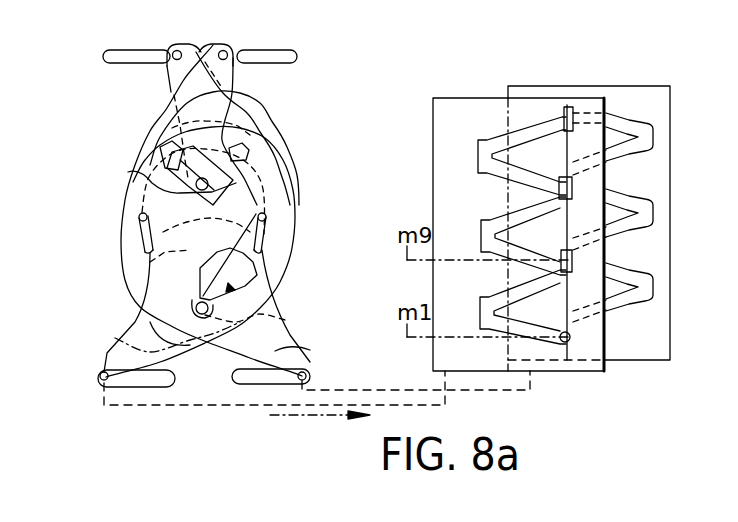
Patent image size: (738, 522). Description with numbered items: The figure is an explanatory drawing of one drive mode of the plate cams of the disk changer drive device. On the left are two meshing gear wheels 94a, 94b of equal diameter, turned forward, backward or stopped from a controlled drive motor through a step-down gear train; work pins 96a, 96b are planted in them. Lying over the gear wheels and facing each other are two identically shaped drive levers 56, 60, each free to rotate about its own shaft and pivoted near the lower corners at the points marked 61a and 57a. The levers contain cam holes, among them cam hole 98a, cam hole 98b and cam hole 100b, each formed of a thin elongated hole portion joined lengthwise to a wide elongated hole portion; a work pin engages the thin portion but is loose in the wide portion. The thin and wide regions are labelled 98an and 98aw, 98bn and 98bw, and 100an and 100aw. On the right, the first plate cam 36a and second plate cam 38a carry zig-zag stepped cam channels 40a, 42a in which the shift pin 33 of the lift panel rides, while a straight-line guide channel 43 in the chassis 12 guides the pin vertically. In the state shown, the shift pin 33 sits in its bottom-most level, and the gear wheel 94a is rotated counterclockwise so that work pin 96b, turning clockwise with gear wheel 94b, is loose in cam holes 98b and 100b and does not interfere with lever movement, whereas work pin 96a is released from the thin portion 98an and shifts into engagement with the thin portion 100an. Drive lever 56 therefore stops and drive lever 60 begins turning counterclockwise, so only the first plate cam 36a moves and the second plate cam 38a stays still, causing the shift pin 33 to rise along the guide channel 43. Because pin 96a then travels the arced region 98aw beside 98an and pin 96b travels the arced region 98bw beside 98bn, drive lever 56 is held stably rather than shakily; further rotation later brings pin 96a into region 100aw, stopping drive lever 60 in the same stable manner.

The chassis 12 is at (106, 200).
The shift pin 33 is at (567, 343).
The first plate cam 36a is at (432, 98).
The second plate cam 38a is at (652, 83).
The stepped cam channel 40a is at (480, 158).
The stepped cam channel 42a is at (655, 141).
The straight-line guide channel 43 is at (478, 153).
The drive lever 56 is at (283, 356).
The pivot 57a is at (307, 376).
The drive lever 60 is at (137, 363).
The pivot 61a is at (257, 399).
The gear wheel 94a is at (138, 344).
The gear wheel 94b is at (165, 84).
The work pin 96a is at (273, 284).
The work pin 96b is at (270, 186).
The cam hole 98a is at (268, 255).
The thin elongated hole portion of cam hole 98an is at (195, 308).
The wide elongated hole portion of cam hole 98aw is at (268, 224).
The cam hole 98b is at (128, 172).
The thin elongated hole portion of cam hole 98bn is at (162, 148).
The wide elongated hole portion of cam hole 98bw is at (247, 127).
The thin elongated hole portion of cam hole 100an is at (278, 330).
The wide elongated hole portion of cam hole 100aw is at (147, 302).
The cam hole 100b is at (249, 151).